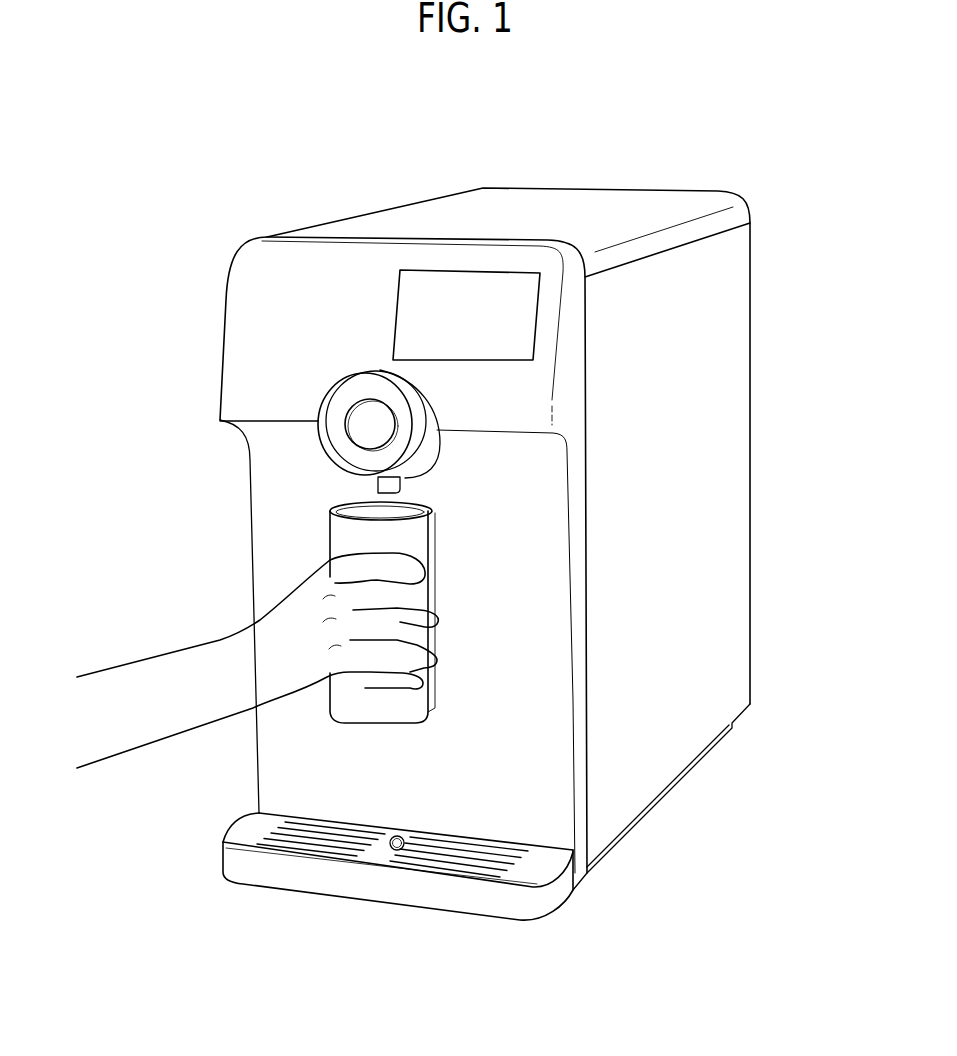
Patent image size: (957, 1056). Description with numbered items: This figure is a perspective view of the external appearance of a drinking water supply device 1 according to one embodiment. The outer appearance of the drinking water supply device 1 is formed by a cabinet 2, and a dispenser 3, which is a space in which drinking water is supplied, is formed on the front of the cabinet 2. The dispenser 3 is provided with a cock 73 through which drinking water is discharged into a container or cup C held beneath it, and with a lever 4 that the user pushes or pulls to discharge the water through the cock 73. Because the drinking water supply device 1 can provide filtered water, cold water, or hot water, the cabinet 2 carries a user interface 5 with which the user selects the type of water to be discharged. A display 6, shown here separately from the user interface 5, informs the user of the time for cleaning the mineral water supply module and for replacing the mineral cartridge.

The drinking water supply device 1 is at (611, 165).
The cabinet 2 is at (720, 316).
The dispenser 3 is at (533, 503).
The lever 4 is at (430, 687).
The user interface 5 is at (342, 398).
The display 6 is at (460, 270).
The cock 73 is at (376, 488).
The cup C is at (343, 535).